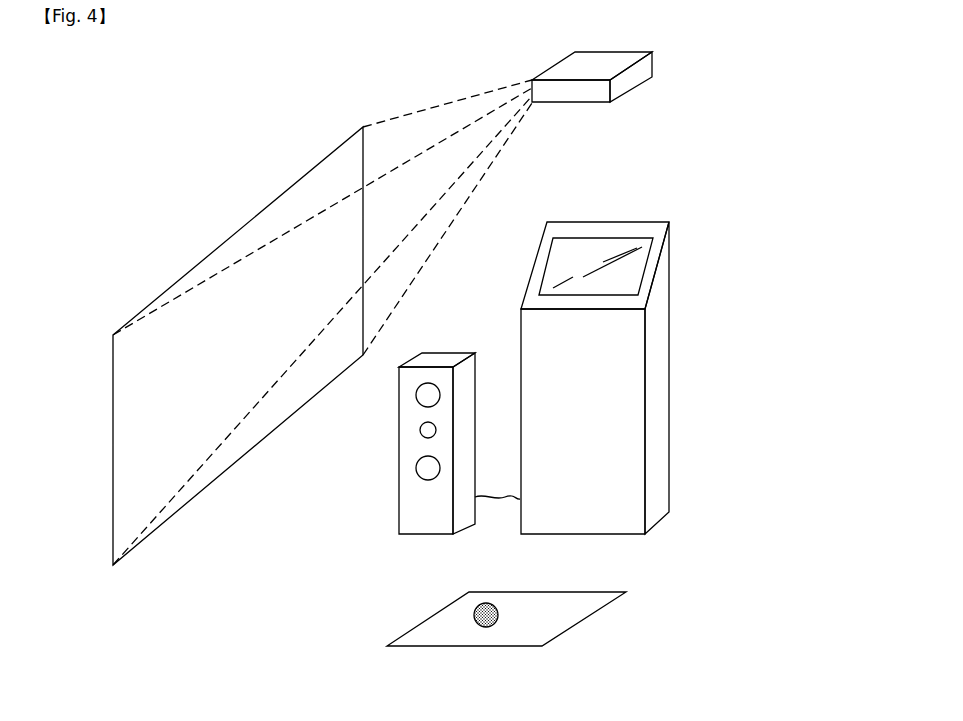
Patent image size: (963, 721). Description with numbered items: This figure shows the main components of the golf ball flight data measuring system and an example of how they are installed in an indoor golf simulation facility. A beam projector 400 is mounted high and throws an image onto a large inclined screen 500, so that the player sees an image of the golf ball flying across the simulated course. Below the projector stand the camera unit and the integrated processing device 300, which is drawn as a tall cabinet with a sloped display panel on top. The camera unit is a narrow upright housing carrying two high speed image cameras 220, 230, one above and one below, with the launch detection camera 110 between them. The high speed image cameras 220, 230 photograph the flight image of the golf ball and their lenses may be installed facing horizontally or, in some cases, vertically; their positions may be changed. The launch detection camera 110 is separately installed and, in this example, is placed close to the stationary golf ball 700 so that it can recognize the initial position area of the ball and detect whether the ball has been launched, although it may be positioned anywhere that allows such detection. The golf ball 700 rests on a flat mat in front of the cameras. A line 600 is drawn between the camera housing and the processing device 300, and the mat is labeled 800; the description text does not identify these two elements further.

The beam projector 400 is at (646, 68).
The screen 500 is at (250, 223).
The high speed image camera 220 is at (418, 392).
The launch detection camera 110 is at (420, 430).
The high speed image camera 230 is at (420, 467).
The cable 600 is at (502, 507).
The integrated processing device 300 is at (659, 418).
The golf ball 700 is at (474, 626).
The platform 800 is at (568, 613).